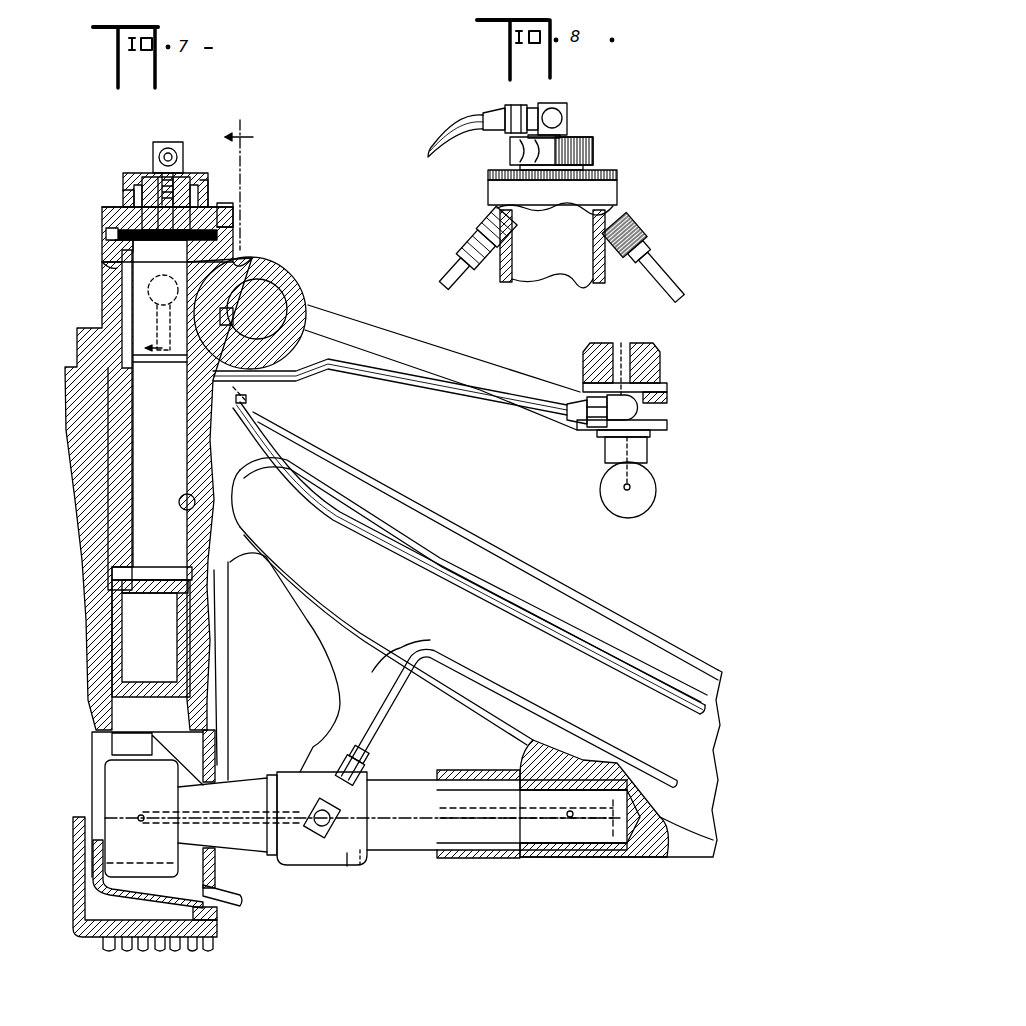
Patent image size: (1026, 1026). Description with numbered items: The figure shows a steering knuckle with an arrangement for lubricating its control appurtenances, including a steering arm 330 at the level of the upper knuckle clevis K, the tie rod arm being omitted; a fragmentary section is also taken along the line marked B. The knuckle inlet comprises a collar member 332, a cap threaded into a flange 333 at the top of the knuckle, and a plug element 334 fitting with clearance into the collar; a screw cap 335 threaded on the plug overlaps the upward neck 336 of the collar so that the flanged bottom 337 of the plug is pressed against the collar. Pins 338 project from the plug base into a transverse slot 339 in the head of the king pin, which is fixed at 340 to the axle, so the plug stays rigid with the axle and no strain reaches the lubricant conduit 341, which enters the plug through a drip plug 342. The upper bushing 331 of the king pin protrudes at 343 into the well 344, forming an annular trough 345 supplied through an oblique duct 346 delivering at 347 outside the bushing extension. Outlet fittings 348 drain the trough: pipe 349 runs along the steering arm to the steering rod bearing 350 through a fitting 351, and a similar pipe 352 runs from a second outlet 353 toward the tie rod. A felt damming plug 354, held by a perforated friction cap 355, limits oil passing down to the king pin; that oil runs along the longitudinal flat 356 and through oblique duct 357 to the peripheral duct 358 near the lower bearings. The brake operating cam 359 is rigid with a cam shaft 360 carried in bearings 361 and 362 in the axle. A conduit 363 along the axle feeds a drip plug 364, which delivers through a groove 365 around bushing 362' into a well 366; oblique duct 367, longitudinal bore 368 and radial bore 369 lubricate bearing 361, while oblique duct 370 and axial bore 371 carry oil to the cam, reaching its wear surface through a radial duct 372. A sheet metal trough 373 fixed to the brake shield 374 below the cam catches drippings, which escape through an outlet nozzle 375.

In FIG. 7, the steering arm 330 is at (437, 350).
In FIG. 7, the upper bushing 331 is at (253, 273).
In FIG. 7, the collar member 332 is at (227, 215).
In FIG. 8, the collar member 332 is at (618, 170).
In FIG. 7, the flange 333 is at (106, 232).
In FIG. 7, the plug element 334 is at (226, 167).
In FIG. 7, the screw cap 335 is at (125, 178).
In FIG. 8, the screw cap 335 is at (592, 137).
In FIG. 7, the upward neck 336 is at (123, 192).
In FIG. 7, the flanged bottom 337 is at (117, 268).
In FIG. 7, the pins 338 is at (230, 235).
In FIG. 7, the transverse slot 339 is at (127, 277).
In FIG. 7, the king pin fixing point 340 is at (200, 505).
In FIG. 7, the lubricant conduit 341 is at (267, 438).
In FIG. 8, the lubricant conduit 341 is at (467, 97).
In FIG. 7, the drip plug 342 is at (171, 150).
In FIG. 8, the drip plug 342 is at (525, 120).
In FIG. 7, the bushing extension 343 is at (233, 258).
In FIG. 7, the well 344 is at (127, 297).
In FIG. 7, the annular trough 345 is at (125, 252).
In FIG. 7, the oblique duct 346 is at (155, 180).
In FIG. 7, the duct outlet 347 is at (113, 228).
In FIG. 8, the outlet fittings 348 is at (475, 233).
In FIG. 7, the pipe 349 is at (450, 394).
In FIG. 8, the pipe 349 is at (457, 268).
In FIG. 7, the steering rod bearing 350 is at (603, 485).
In FIG. 7, the fitting 351 is at (643, 417).
In FIG. 8, the pipe 352 is at (680, 290).
In FIG. 8, the second outlet 353 is at (637, 227).
In FIG. 7, the damming plug 354 is at (220, 203).
In FIG. 7, the perforated friction cap 355 is at (227, 227).
In FIG. 7, the longitudinal flat 356 is at (133, 480).
In FIG. 7, the oblique duct 357 is at (147, 553).
In FIG. 7, the peripheral duct 358 is at (123, 607).
In FIG. 7, the brake operating cam 359 is at (113, 845).
In FIG. 7, the cam shaft 360 is at (420, 833).
In FIG. 7, the bearing 361 is at (558, 851).
In FIG. 7, the bearing 362 is at (348, 875).
In FIG. 7, the bushing 362' is at (386, 870).
In FIG. 7, the conduit 363 is at (397, 700).
In FIG. 7, the drip plug 364 is at (353, 807).
In FIG. 7, the groove 365 is at (317, 847).
In FIG. 7, the well 366 is at (307, 780).
In FIG. 7, the oblique duct 367 is at (357, 777).
In FIG. 7, the bore 368 is at (487, 817).
In FIG. 7, the radial bore 369 is at (571, 817).
In FIG. 7, the oblique duct 370 is at (283, 773).
In FIG. 7, the bore 371 is at (230, 812).
In FIG. 7, the duct 372 is at (138, 816).
In FIG. 7, the sheet metal trough 373 is at (150, 897).
In FIG. 7, the brake shield 374 is at (215, 872).
In FIG. 7, the outlet nozzle 375 is at (240, 905).
In FIG. 7, the upper knuckle clevis K is at (293, 297).
In FIG. 7, the section line B is at (199, 251).